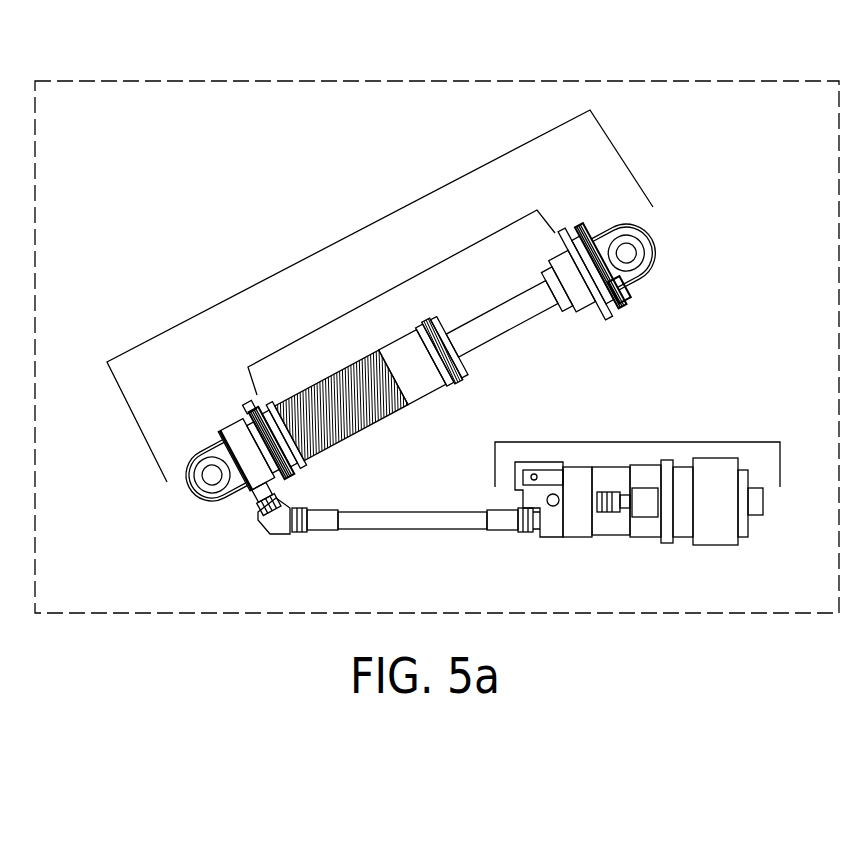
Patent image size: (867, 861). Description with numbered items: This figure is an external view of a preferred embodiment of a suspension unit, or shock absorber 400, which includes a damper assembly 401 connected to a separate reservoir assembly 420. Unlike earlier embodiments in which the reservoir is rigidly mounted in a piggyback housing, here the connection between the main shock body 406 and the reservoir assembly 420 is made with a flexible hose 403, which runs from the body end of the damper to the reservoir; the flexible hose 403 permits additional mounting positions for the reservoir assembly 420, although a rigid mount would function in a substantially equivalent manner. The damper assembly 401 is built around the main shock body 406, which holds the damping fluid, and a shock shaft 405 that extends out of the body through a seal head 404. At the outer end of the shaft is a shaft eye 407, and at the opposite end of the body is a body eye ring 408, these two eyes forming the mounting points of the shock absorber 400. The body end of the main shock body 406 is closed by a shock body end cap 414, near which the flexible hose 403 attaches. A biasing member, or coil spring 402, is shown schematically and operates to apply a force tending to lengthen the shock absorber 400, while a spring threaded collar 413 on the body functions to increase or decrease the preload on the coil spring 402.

The shock absorber 400 is at (420, 80).
The damper assembly 401 is at (383, 217).
The coil spring 402 is at (357, 307).
The flexible hose 403 is at (393, 529).
The seal head 404 is at (433, 337).
The shock shaft 405 is at (490, 343).
The main shock body 406 is at (335, 445).
The shaft eye 407 is at (655, 253).
The body eye ring 408 is at (190, 457).
The spring threaded collar 413 is at (250, 403).
The shock body end cap 414 is at (238, 498).
The reservoir assembly 420 is at (625, 442).